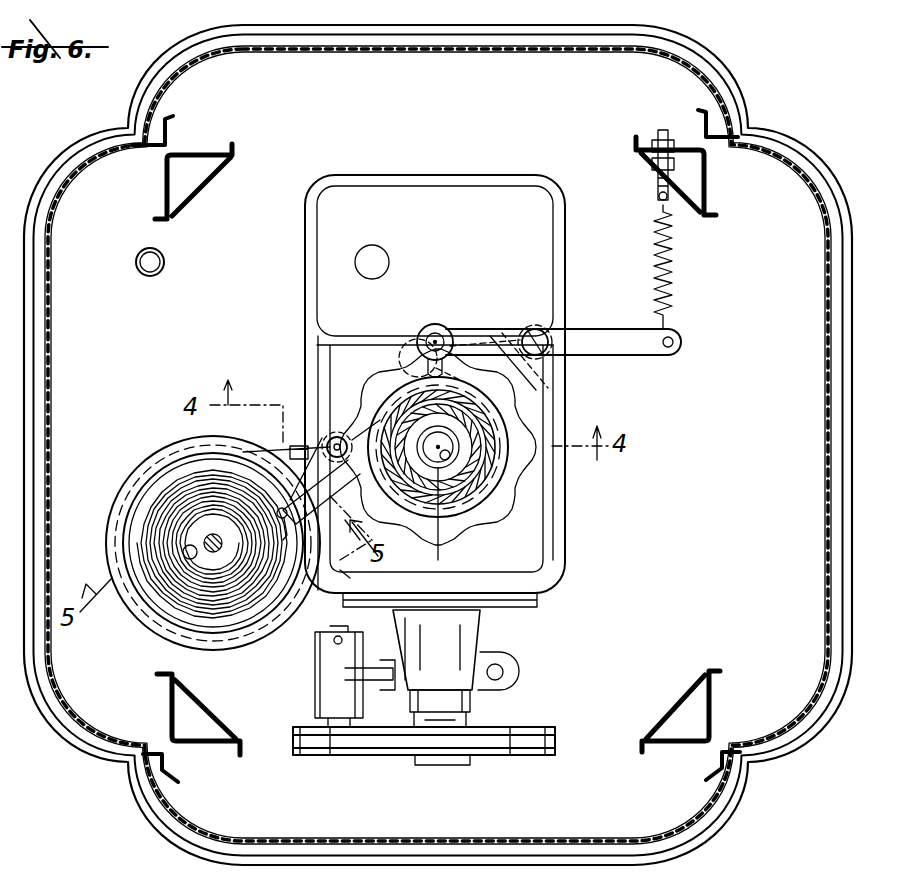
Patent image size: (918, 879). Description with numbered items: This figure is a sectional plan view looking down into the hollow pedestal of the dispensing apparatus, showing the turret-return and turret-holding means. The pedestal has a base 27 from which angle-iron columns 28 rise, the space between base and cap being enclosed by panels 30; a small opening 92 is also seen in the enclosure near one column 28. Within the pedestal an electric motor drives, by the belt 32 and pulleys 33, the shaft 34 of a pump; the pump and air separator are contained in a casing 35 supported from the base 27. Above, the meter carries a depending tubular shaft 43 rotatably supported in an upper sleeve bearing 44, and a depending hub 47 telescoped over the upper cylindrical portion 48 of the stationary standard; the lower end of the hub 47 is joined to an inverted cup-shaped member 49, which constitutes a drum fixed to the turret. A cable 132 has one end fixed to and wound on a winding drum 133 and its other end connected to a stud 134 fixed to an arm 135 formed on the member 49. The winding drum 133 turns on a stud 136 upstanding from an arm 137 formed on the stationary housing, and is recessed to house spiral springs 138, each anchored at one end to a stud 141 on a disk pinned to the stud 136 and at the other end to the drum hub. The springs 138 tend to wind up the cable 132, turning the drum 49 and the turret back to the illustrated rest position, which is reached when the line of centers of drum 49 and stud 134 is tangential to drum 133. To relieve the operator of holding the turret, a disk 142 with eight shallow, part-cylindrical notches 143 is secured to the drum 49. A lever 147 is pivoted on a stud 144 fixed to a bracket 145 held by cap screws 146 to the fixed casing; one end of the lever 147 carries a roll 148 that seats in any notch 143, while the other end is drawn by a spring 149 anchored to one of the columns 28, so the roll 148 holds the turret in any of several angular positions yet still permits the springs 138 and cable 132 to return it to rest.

The base 27 is at (728, 66).
The angle-iron columns 28 is at (200, 154).
The panels 30 is at (380, 52).
The belt 32 is at (556, 738).
The pulleys 33 is at (405, 760).
The shaft 34 is at (480, 712).
The casing 35 is at (545, 552).
The tubular shaft 43 is at (470, 475).
The upper sleeve bearing 44 is at (425, 475).
The hub 47 is at (438, 465).
The upper cylindrical portion 48 is at (438, 562).
The inverted cup-shaped member 49 is at (455, 470).
The hole 92 is at (166, 258).
The cable 132 is at (290, 446).
The drum 133 is at (152, 634).
The stud 134 is at (330, 438).
The arm 135 is at (352, 432).
The stud 136 is at (212, 535).
The arm 137 is at (356, 555).
The spiral springs 138 is at (160, 500).
The stud 141 is at (318, 500).
The disk 142 is at (515, 463).
The notches 143 is at (505, 498).
The stud 144 is at (535, 328).
The bracket 145 is at (546, 378).
The cap screws 146 is at (410, 342).
The lever 147 is at (612, 332).
The roll 148 is at (440, 325).
The spring 149 is at (672, 304).